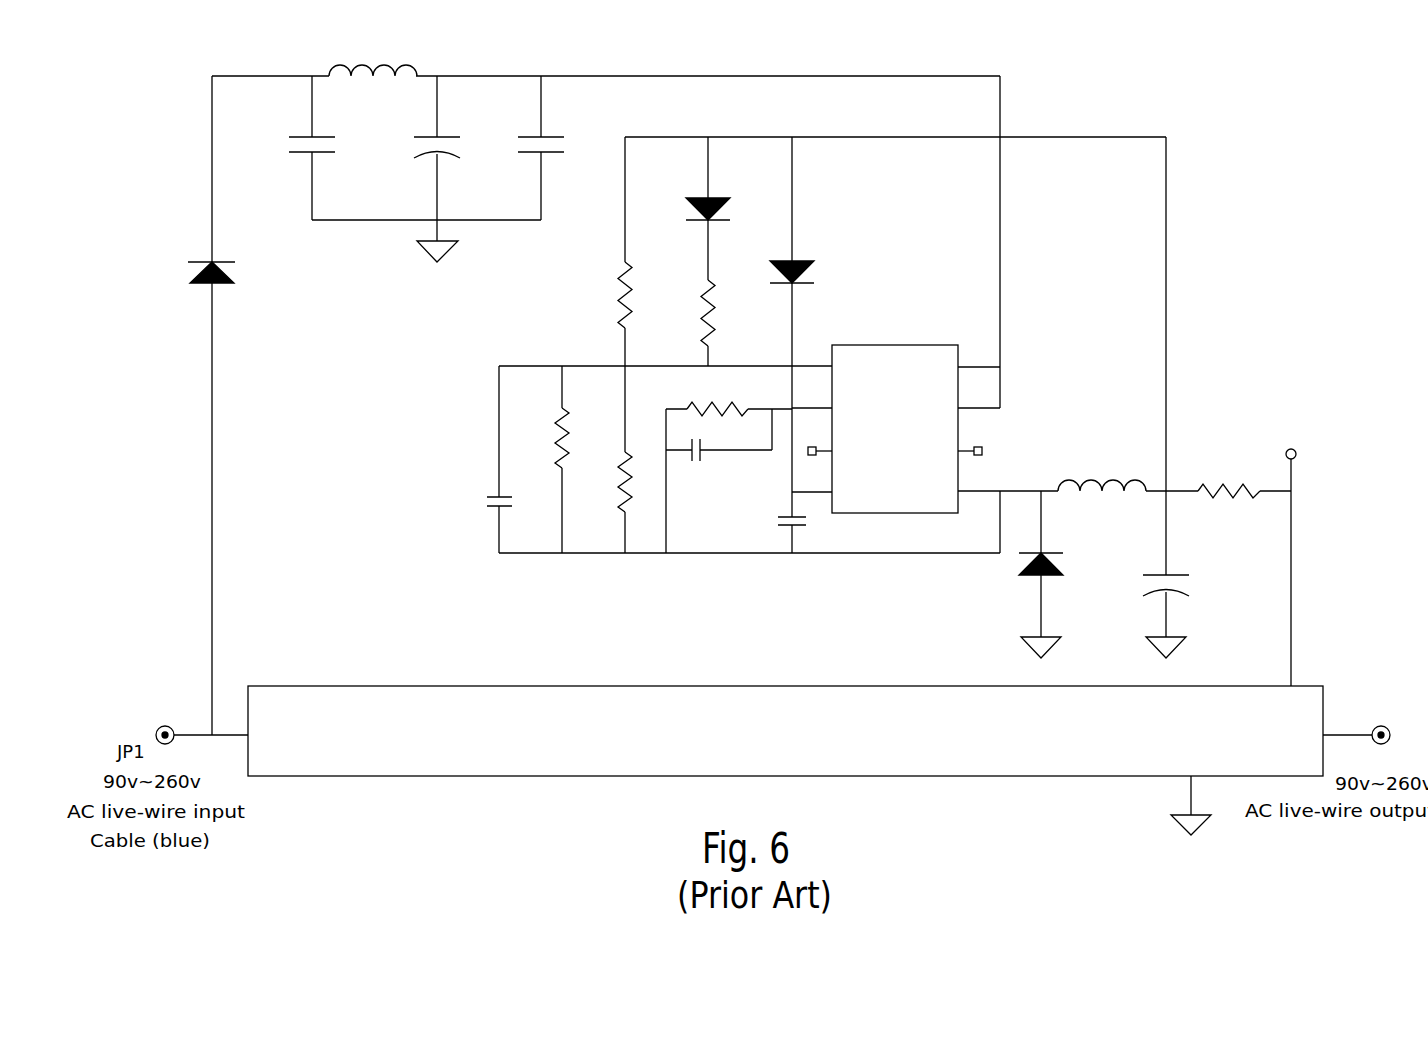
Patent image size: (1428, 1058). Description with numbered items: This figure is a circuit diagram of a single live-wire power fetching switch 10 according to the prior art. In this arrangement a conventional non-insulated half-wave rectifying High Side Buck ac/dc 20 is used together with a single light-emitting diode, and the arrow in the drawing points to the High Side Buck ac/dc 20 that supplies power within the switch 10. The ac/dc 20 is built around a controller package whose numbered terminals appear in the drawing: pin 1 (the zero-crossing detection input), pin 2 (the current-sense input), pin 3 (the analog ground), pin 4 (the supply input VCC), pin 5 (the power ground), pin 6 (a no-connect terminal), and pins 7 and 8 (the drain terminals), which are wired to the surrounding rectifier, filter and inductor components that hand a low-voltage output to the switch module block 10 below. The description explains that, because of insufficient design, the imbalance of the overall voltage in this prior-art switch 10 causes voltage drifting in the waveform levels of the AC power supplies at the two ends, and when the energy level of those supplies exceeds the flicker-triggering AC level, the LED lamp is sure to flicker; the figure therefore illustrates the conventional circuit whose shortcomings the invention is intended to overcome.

The non-insulated half-wave rectifying High Side Buck ac/dc 20 is at (1022, 353).
The single live-wire power fetching switch 10 is at (977, 767).
The pin 1 ZCD of controller U5 1 is at (812, 355).
The pin 2 IST of controller U5 2 is at (812, 397).
The pin 3 AGND of controller U5 3 is at (819, 441).
The pin 4 VCC of controller U5 4 is at (812, 480).
The pin 5 PGND of controller U5 5 is at (1008, 480).
The pin 6 NC of controller U5 6 is at (970, 441).
The pin 7 D of controller U5 7 is at (979, 397).
The pin 8 D of controller U5 8 is at (979, 356).